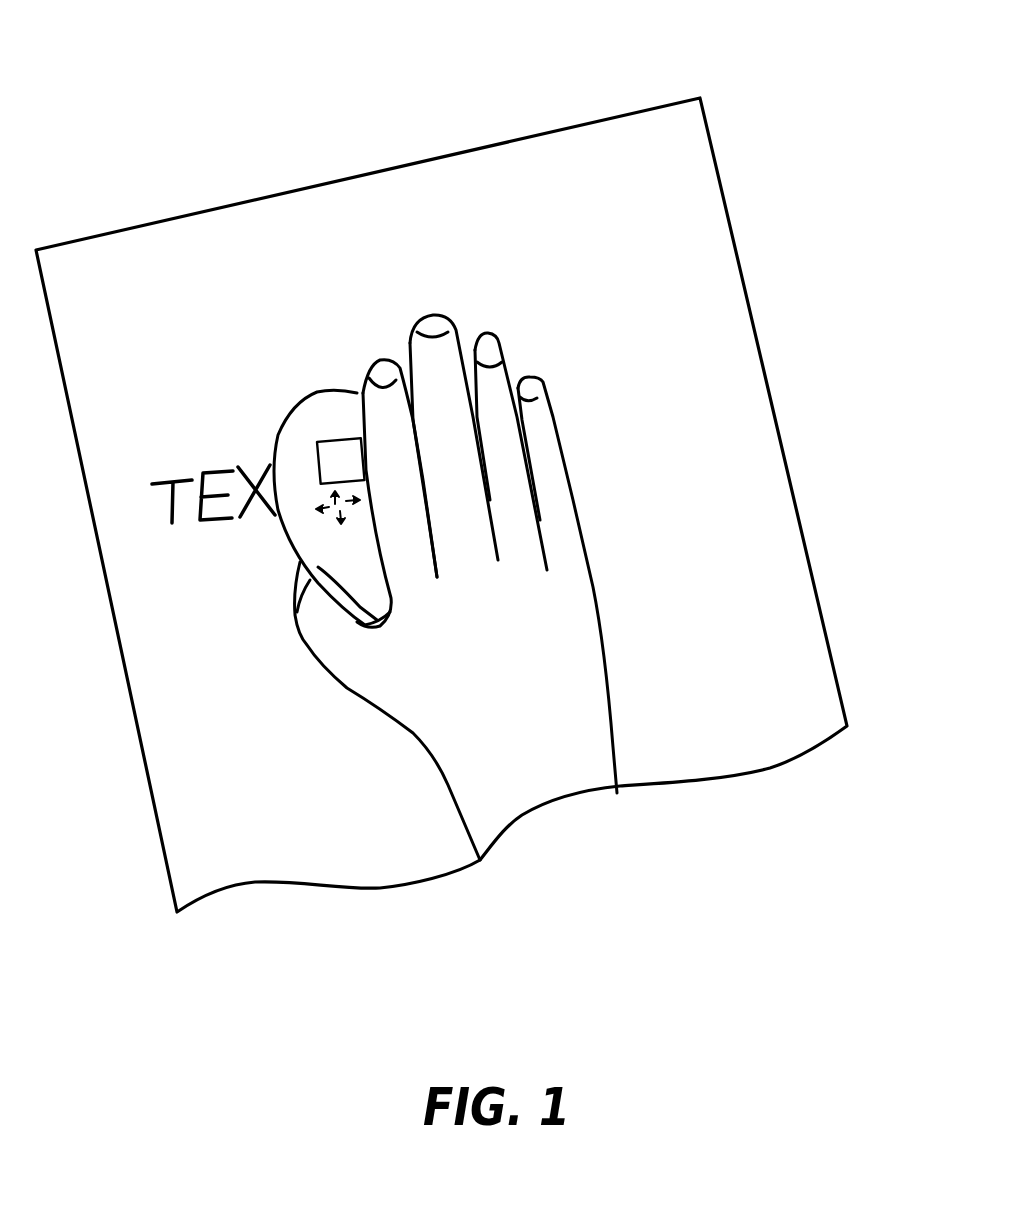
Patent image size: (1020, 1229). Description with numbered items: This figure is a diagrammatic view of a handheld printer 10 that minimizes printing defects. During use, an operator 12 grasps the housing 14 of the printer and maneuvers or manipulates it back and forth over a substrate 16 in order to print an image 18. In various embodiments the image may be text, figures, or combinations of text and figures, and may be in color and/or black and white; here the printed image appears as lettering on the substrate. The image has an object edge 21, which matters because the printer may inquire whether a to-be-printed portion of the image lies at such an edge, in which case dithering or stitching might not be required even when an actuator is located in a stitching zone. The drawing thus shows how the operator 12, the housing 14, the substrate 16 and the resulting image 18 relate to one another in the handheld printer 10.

The handheld printer 10 is at (267, 489).
The operator 12 is at (587, 700).
The housing 14 is at (313, 392).
The substrate 16 is at (634, 112).
The image 18 is at (185, 471).
The edge 21 is at (149, 478).